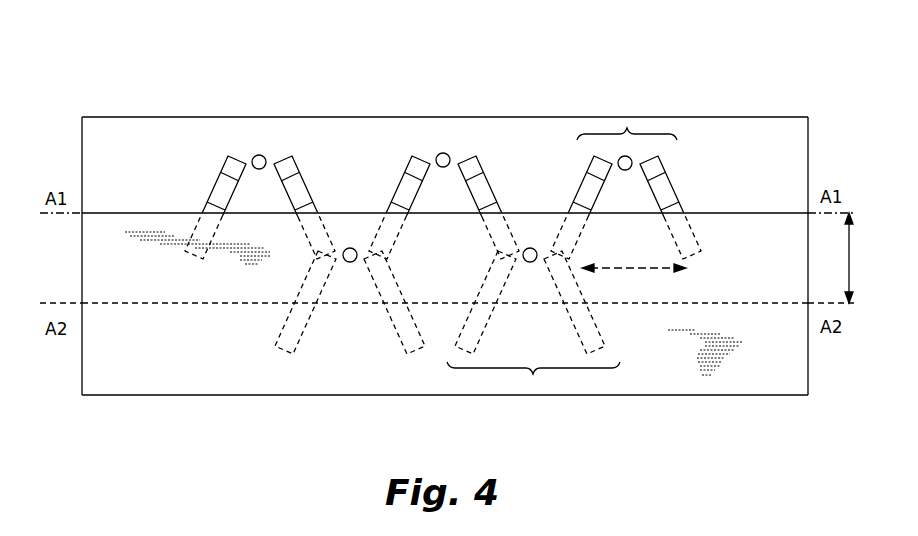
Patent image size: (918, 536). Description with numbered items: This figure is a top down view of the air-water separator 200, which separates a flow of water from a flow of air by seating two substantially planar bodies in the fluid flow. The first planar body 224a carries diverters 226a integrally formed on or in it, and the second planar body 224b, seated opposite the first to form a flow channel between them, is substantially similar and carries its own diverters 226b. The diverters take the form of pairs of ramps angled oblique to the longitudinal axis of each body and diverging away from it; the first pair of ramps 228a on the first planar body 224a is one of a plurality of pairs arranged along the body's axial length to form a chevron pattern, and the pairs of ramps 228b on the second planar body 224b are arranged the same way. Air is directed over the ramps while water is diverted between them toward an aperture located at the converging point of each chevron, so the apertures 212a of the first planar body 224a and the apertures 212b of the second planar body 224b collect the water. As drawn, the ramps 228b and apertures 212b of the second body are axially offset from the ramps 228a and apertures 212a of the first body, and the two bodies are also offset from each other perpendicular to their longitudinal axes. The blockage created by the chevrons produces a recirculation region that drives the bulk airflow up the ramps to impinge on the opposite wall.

The air-water separator 200 is at (160, 92).
The apertures of the first planar body 212a is at (261, 154).
The apertures of the second planar body 212b is at (350, 247).
The first planar body 224a is at (773, 128).
The second planar body 224b is at (770, 368).
The diverters of the first planar body 226a is at (406, 165).
The diverters of the second planar body 226b is at (288, 358).
The first pair of ramps 228a is at (623, 128).
The pairs of ramps of the second planar body 228b is at (533, 375).